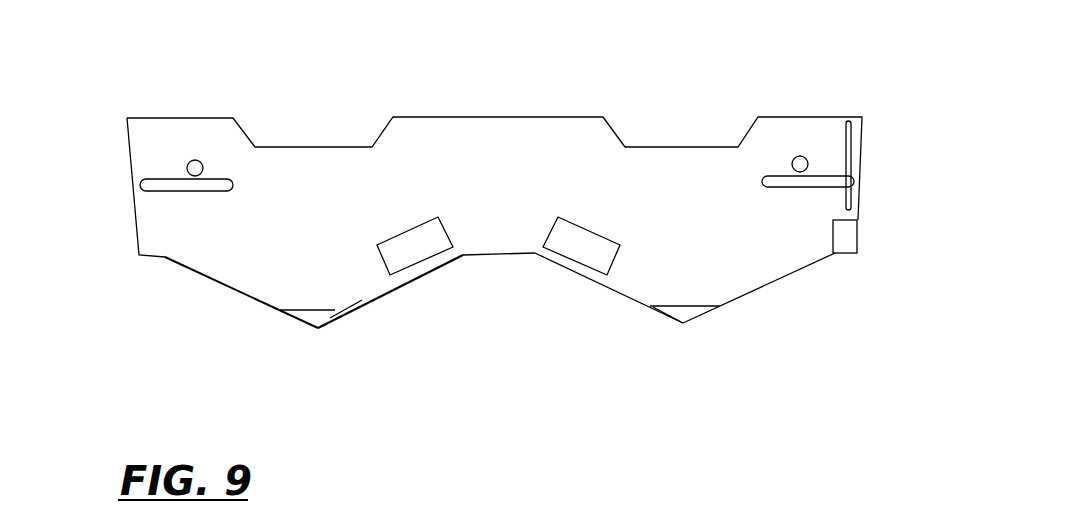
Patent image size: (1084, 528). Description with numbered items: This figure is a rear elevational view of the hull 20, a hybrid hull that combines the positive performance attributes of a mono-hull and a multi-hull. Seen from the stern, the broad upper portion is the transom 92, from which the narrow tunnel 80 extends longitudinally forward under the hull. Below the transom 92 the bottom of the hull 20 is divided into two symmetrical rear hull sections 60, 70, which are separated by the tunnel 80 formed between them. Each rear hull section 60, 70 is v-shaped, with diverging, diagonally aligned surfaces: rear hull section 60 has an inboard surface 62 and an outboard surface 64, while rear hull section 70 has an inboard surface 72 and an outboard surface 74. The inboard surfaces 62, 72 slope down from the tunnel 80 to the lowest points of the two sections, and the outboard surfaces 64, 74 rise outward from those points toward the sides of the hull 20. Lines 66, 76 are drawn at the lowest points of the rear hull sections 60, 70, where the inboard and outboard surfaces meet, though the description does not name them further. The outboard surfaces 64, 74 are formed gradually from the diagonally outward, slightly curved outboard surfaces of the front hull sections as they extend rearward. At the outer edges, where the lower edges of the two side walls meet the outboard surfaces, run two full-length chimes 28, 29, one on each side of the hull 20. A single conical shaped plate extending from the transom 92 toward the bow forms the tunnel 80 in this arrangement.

The hull 20 is at (482, 213).
The chime 28 is at (845, 253).
The chime 29 is at (148, 263).
The rear hull section 60 is at (684, 343).
The inboard surface 62 is at (768, 288).
The outboard surface 64 is at (632, 303).
The fold line 66 is at (663, 313).
The rear hull section 70 is at (298, 333).
The inboard surface 72 is at (247, 290).
The outboard surface 74 is at (363, 303).
The fold line 76 is at (322, 327).
The tunnel 80 is at (488, 266).
The transom 92 is at (510, 180).